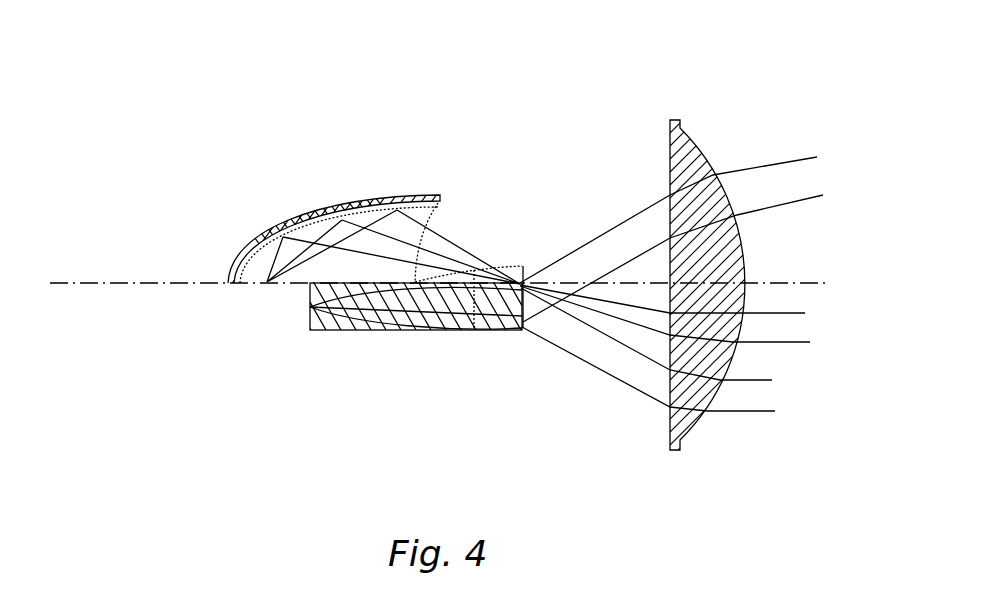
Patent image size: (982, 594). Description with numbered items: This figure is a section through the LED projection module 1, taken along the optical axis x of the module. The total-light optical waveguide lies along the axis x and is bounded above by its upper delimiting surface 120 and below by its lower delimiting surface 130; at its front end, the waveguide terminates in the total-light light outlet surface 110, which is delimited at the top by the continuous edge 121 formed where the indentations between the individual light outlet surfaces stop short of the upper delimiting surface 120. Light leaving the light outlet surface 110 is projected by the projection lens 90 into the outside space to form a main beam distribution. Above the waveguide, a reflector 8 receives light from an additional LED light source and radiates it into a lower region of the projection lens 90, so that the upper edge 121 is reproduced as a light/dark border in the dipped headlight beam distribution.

The LED projection module 1 is at (449, 103).
The optical axis x is at (138, 282).
The reflector 8 is at (380, 195).
The projection lens 90 is at (697, 153).
The total-light light outlet surface 110 is at (526, 307).
The upper delimiting surface 120 is at (466, 275).
The continuous edge 121 is at (525, 264).
The lower delimiting surface 130 is at (333, 331).